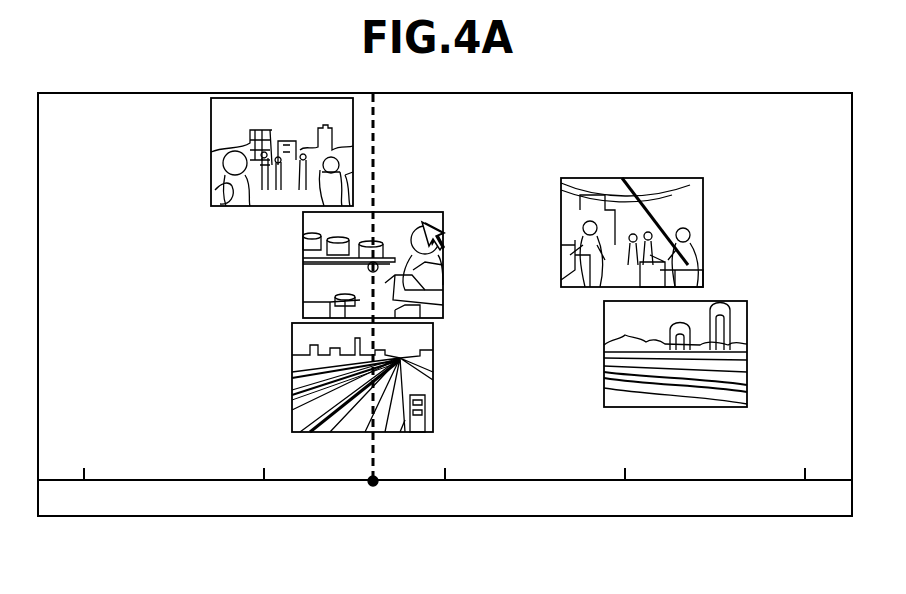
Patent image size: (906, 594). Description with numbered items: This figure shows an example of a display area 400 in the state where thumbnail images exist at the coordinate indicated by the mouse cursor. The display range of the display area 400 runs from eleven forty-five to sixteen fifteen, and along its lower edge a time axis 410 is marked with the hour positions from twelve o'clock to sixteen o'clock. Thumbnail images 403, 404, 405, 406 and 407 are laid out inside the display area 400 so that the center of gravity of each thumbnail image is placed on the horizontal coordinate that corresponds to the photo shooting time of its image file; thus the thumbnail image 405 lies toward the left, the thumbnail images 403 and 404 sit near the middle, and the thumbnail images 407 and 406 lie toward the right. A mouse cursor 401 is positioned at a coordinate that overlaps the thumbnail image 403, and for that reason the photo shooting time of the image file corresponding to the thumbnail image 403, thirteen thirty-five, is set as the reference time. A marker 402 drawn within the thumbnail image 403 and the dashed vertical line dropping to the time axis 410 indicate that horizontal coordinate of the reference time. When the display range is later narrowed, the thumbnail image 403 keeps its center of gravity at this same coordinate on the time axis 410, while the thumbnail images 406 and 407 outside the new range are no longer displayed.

The display area 400 is at (178, 517).
The time axis 410 is at (120, 480).
The mouse cursor 401 is at (446, 236).
The marker indicating time on the image 402 is at (380, 267).
The thumbnail image 403 is at (367, 243).
The thumbnail image 404 is at (297, 372).
The thumbnail image 405 is at (211, 115).
The thumbnail image 406 is at (681, 411).
The thumbnail image 407 is at (680, 188).